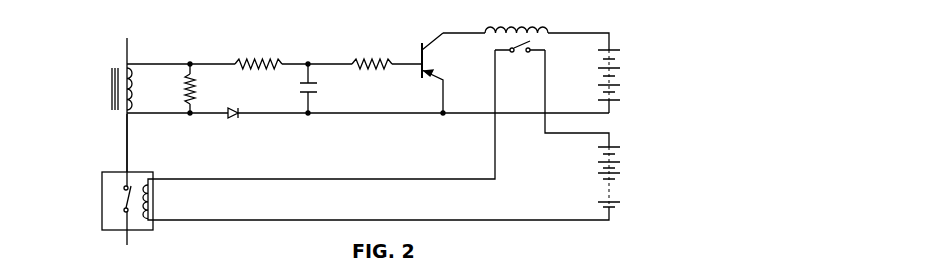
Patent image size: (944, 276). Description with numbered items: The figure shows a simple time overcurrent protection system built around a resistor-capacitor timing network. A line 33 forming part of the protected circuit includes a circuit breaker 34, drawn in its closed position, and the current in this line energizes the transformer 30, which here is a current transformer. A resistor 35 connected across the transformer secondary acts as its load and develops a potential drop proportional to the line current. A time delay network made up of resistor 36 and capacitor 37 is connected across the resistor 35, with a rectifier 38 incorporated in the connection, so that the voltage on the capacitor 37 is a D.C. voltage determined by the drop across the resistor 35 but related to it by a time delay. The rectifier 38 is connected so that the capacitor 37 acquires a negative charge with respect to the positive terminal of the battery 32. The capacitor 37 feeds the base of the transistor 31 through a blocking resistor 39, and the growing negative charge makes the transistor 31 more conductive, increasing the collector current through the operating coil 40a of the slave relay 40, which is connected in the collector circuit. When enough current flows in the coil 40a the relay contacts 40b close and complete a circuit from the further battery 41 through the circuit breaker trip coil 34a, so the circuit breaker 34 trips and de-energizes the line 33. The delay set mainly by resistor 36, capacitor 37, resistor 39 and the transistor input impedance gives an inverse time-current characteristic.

The transformer 30 is at (122, 132).
The transistor 31 is at (434, 103).
The battery 32 is at (650, 86).
The line 33 is at (126, 152).
The circuit breaker 34 is at (124, 211).
The circuit breaker trip coil 34a is at (153, 200).
The resistor 35 is at (221, 101).
The resistor 36 is at (266, 55).
The capacitor 37 is at (344, 101).
The rectifier 38 is at (249, 143).
The blocking resistor 39 is at (384, 56).
The slave relay 40 is at (529, 40).
The operating coil 40a is at (516, 18).
The relay contacts 40b is at (520, 58).
The further battery 41 is at (650, 191).